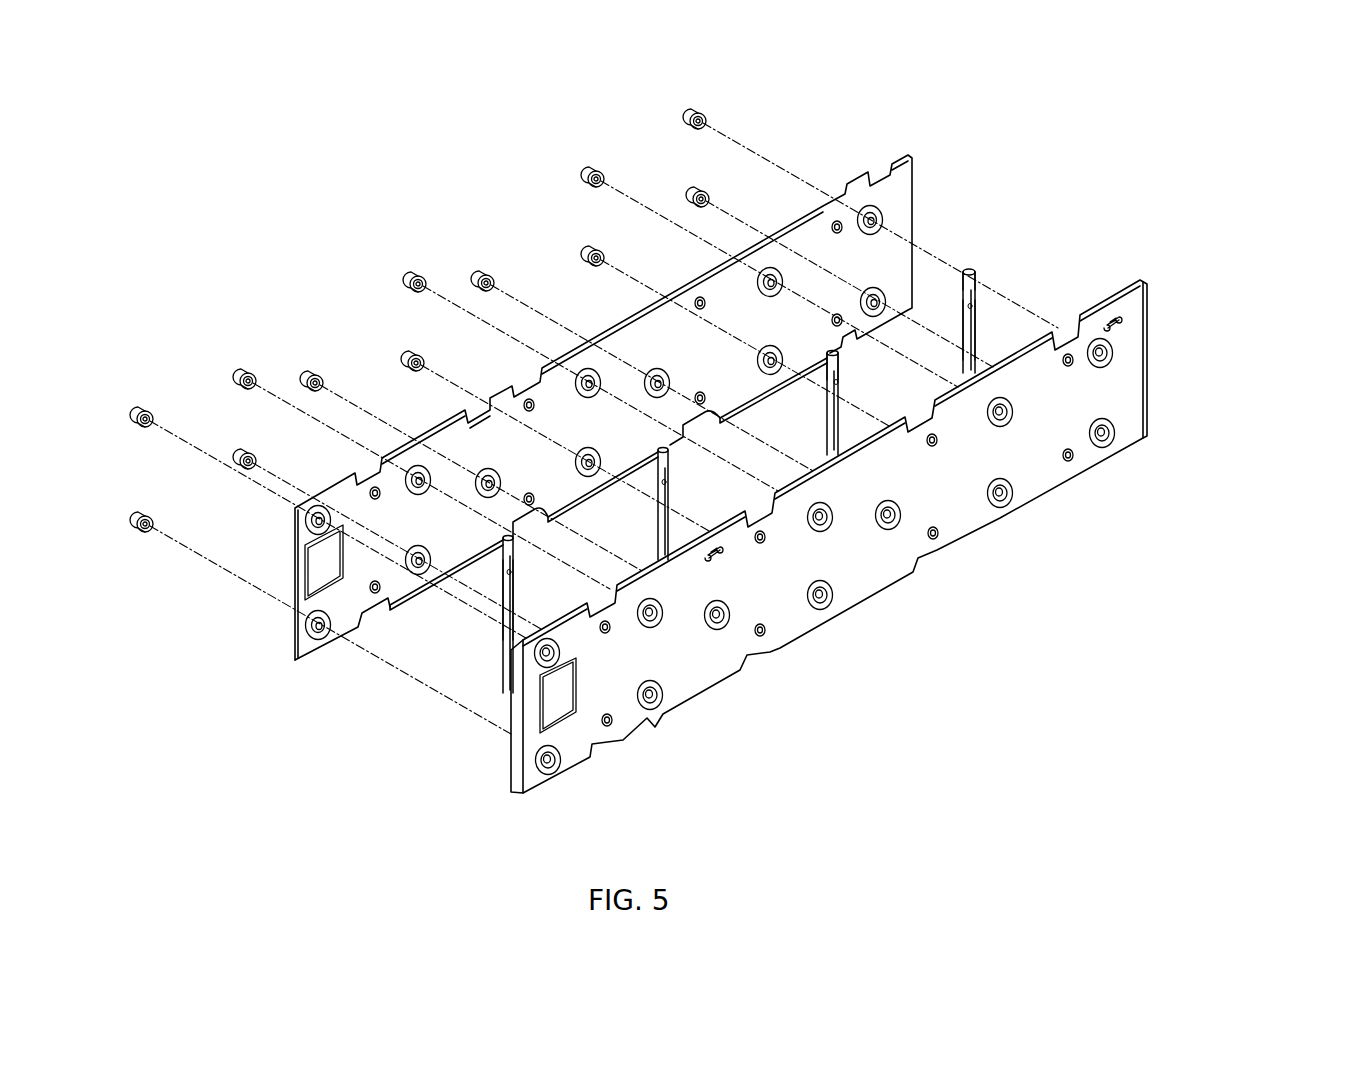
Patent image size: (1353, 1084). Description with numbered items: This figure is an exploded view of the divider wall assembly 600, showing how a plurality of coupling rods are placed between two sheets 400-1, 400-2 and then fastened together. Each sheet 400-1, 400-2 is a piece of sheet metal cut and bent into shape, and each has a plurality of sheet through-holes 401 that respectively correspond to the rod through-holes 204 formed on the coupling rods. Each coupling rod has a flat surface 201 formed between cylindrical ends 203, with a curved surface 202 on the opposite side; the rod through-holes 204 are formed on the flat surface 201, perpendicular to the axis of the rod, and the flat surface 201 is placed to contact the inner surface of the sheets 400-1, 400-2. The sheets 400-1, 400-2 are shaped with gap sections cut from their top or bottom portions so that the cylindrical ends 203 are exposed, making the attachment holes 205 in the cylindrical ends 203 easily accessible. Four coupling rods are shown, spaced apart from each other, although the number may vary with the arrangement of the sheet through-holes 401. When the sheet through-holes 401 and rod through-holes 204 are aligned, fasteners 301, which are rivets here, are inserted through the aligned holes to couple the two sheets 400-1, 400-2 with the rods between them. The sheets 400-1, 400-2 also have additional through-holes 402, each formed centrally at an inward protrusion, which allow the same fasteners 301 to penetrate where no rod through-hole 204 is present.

The divider wall assembly 600 is at (702, 456).
The sheet 400-1 is at (892, 536).
The sheet 400-2 is at (660, 405).
The sheet through-hole 401 is at (750, 471).
The additional through-hole 402 is at (716, 490).
The fastener 301 is at (419, 320).
The flat surface 201 is at (859, 478).
The curved surface 202 is at (779, 313).
The cylindrical end 203 is at (784, 340).
The rod through-hole 204 is at (725, 467).
The attachment hole 205 is at (984, 249).